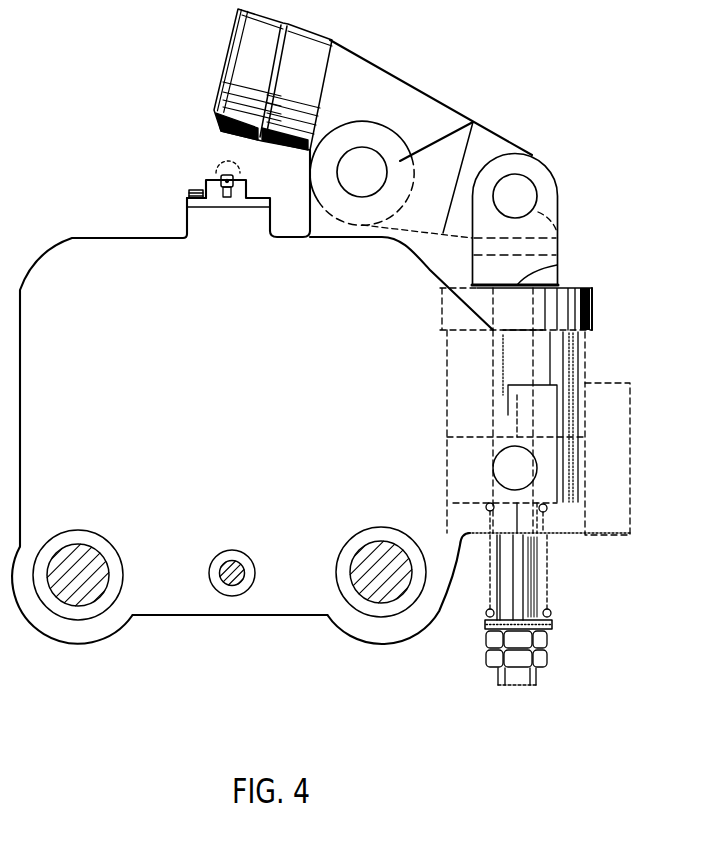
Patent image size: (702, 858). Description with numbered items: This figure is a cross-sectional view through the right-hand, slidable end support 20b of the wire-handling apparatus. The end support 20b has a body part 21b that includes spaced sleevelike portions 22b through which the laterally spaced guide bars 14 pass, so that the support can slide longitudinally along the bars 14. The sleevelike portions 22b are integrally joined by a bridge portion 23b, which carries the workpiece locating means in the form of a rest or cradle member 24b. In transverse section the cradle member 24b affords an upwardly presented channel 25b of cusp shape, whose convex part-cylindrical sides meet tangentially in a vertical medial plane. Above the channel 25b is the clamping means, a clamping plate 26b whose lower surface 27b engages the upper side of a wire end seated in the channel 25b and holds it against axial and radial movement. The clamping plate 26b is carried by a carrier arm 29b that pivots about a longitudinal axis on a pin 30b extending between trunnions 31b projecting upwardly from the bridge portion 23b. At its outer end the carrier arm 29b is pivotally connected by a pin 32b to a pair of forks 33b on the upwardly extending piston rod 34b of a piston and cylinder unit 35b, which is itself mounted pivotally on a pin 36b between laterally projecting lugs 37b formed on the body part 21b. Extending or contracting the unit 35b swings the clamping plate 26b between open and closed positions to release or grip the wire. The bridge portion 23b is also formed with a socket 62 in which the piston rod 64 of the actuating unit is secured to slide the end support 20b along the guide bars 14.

The guide bars 14 is at (100, 553).
The end support 20b is at (162, 223).
The body part 21b is at (75, 255).
The sleevelike portions 22b is at (62, 630).
The bridge portion 23b is at (182, 597).
The rest or cradle member 24b is at (208, 197).
The channel 25b is at (225, 168).
The clamping plate 26b is at (247, 53).
The lower surface 27b is at (247, 134).
The carrier arm 29b is at (367, 73).
The pin 30b is at (370, 155).
The trunnions 31b is at (475, 121).
The pin 32b is at (520, 190).
The forks 33b is at (560, 238).
The piston rod 34b is at (561, 270).
The piston and cylinder unit 35b is at (580, 367).
The pin 36b is at (507, 467).
The lugs 37b is at (573, 535).
The socket 62 is at (220, 560).
The piston rod 64 is at (245, 570).